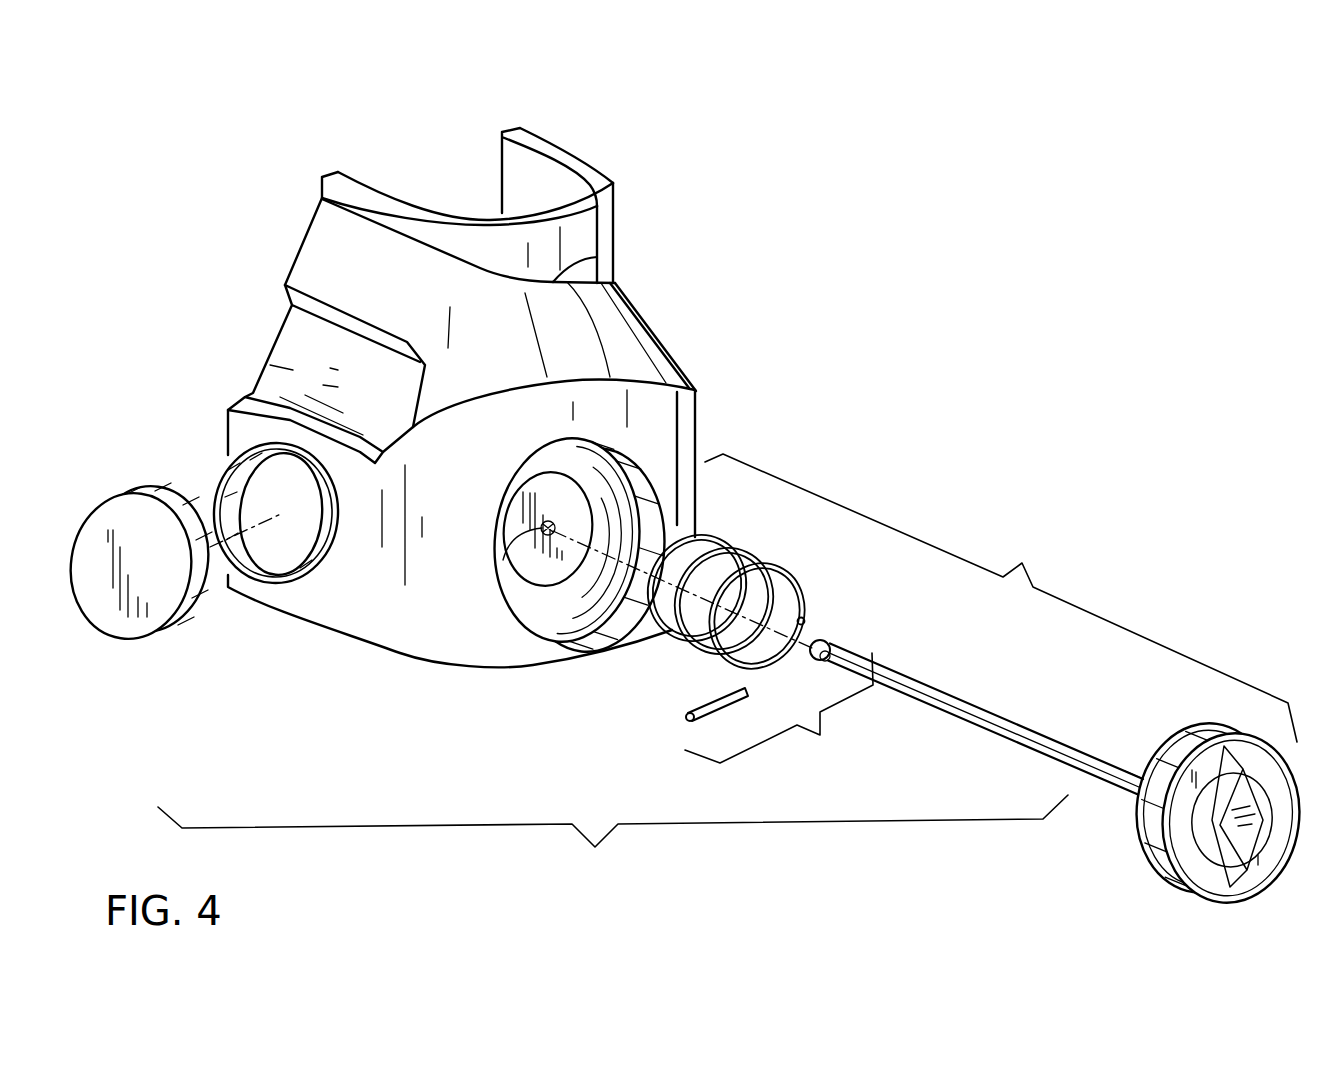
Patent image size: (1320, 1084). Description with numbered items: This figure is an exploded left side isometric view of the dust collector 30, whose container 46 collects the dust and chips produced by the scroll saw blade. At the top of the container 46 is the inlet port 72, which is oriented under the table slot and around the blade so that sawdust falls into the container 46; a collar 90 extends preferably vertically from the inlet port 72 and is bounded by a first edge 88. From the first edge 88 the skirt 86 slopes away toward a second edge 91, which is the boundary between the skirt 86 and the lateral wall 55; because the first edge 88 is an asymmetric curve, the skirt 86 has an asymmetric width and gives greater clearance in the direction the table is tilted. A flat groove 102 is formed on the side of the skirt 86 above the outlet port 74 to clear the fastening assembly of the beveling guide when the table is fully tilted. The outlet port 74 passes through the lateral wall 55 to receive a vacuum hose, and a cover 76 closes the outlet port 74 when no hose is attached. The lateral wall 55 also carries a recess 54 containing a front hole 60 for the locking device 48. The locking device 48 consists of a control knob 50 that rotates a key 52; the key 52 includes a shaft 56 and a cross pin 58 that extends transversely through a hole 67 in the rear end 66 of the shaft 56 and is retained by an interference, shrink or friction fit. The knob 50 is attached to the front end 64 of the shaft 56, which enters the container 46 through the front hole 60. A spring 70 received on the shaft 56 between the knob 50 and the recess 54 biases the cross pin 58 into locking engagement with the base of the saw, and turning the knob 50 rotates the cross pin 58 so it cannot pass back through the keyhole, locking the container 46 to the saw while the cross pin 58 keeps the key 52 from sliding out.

The dust collector 30 is at (613, 840).
The container 46 is at (672, 310).
The locking device 48 is at (1001, 598).
The control knob 50 is at (1168, 878).
The key 52 is at (779, 708).
The recess 54 is at (542, 607).
The lateral wall 55 is at (392, 627).
The shaft 56 is at (927, 685).
The cross pin 58 is at (708, 703).
The front hole 60 is at (503, 560).
The front end 64 is at (1123, 797).
The rear end 66 is at (815, 647).
The hole 67 is at (829, 655).
The spring 70 is at (678, 641).
The inlet port 72 is at (490, 178).
The outlet port 74 is at (278, 557).
The cover 76 is at (150, 604).
The skirt 86 is at (312, 268).
The first edge 88 is at (557, 277).
The collar 90 is at (600, 222).
The second edge 91 is at (624, 380).
The flat groove 102 is at (292, 369).